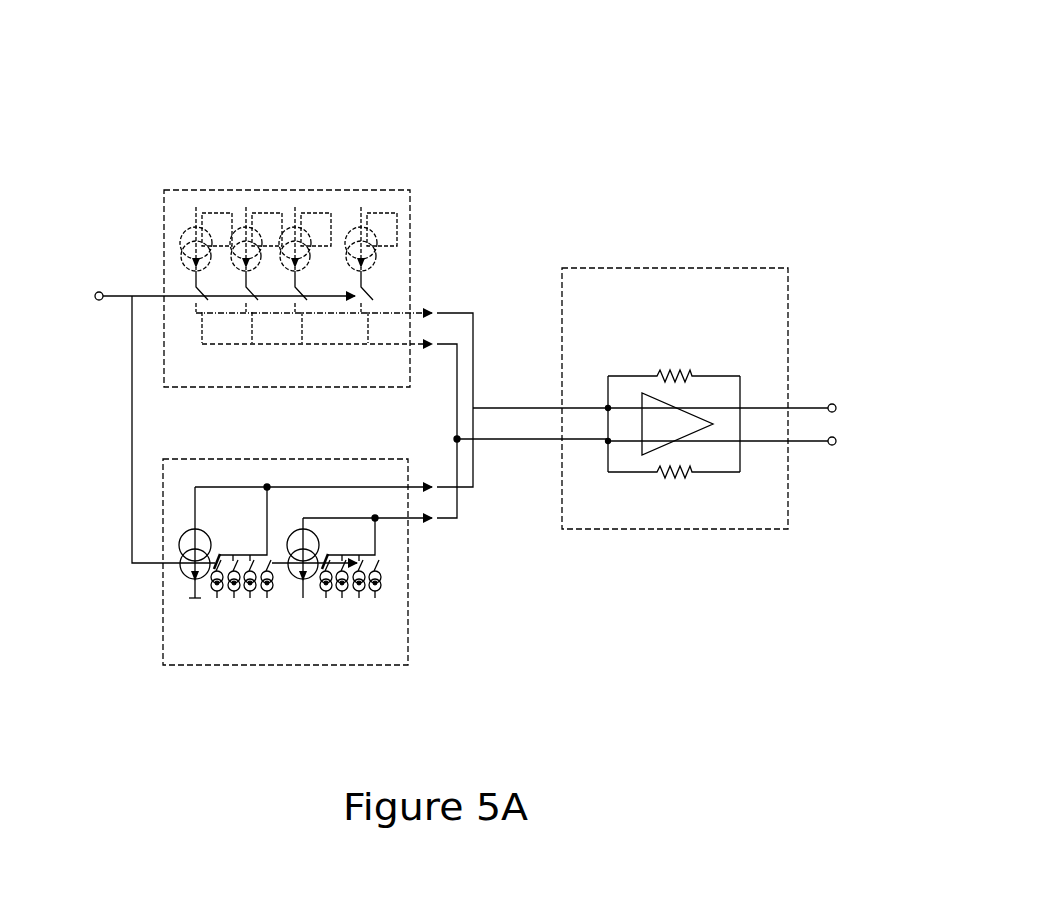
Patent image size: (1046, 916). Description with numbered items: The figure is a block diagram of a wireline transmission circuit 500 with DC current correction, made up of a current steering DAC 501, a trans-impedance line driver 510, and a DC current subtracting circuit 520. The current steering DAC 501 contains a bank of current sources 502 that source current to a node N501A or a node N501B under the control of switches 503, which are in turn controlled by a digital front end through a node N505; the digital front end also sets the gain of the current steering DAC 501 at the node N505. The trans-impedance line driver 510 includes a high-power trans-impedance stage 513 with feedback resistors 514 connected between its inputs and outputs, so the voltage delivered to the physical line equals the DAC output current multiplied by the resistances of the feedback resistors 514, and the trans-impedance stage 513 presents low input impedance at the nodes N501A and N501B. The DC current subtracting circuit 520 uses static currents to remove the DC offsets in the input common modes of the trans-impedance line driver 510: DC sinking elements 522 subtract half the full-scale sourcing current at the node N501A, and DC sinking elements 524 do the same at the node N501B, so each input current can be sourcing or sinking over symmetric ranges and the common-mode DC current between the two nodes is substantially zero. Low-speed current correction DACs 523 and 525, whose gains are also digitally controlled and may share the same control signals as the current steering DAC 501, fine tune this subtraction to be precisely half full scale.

The wireline transmission circuit 500 is at (662, 106).
The current steering DAC 501 is at (361, 184).
The current sources 502 is at (384, 260).
The switches 503 is at (186, 305).
The node N505 is at (99, 288).
The node N501A is at (600, 404).
The node N501B is at (600, 443).
The trans-impedance line driver 510 is at (733, 264).
The trans-impedance stage 513 is at (652, 433).
The feedback resistors 514 is at (706, 366).
The DC current subtracting circuit 520 is at (412, 628).
The DC sinking elements 522 is at (184, 528).
The low-speed current correction DAC 523 is at (204, 602).
The DC sinking elements 524 is at (293, 529).
The low-speed current correction DAC 525 is at (390, 576).